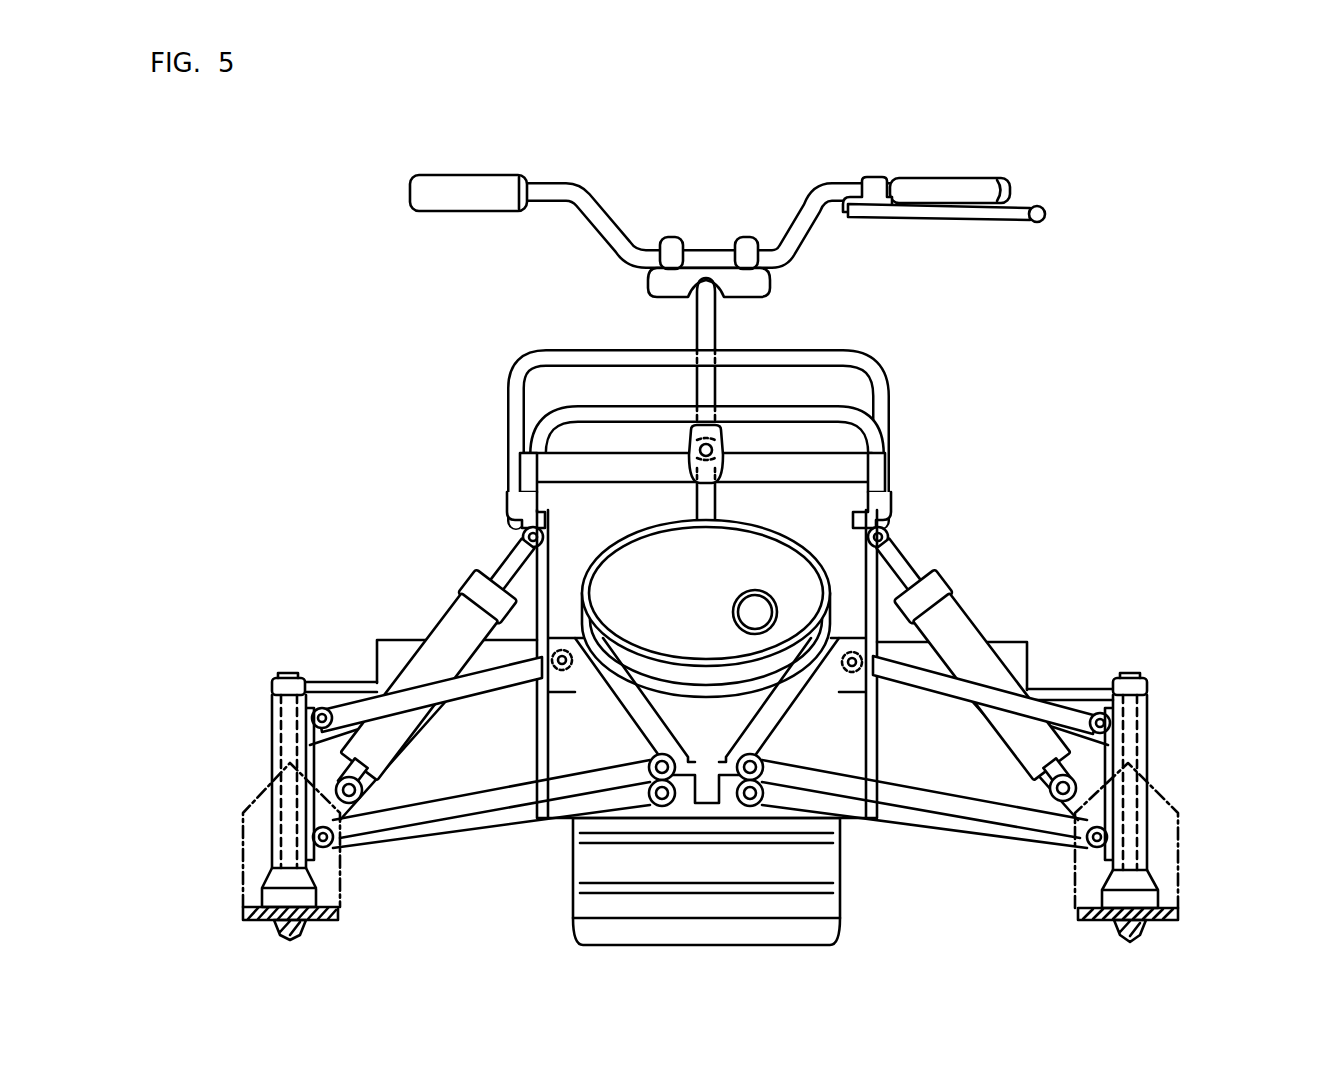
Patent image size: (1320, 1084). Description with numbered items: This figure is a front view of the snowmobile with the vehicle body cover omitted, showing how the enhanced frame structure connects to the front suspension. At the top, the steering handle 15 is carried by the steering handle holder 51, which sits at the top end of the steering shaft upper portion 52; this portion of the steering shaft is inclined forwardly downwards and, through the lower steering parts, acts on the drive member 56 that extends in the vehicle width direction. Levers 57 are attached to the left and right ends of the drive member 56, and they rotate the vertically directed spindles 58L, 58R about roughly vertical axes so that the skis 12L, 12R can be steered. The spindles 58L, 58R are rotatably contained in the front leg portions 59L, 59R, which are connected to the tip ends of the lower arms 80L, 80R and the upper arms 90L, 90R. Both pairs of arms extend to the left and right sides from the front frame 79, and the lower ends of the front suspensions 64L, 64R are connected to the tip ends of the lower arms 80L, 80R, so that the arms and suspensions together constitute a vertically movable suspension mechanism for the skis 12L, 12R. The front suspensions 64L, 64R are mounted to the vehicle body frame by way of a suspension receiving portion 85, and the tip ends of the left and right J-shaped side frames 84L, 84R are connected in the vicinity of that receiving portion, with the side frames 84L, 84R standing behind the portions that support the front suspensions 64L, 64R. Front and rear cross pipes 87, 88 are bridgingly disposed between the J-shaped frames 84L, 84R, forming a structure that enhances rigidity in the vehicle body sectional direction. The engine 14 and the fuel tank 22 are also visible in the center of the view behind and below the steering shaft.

The ski 12R is at (243, 916).
The ski 12L is at (1180, 916).
The engine 14 is at (830, 868).
The handlebar 15 is at (618, 218).
The fuel tank 22 is at (652, 580).
The steering handle holder 51 is at (665, 283).
The steering shaft upper portion 52 is at (705, 312).
The drive member 56 is at (335, 684).
The lever 57 is at (278, 683).
The spindle 58R is at (280, 748).
The spindle 58L is at (1140, 737).
The front leg portion 59R is at (268, 822).
The front leg portion 59L is at (1162, 812).
The front suspension 64R is at (465, 625).
The front suspension 64L is at (936, 618).
The front frame 79 is at (690, 718).
The lower arm 80R is at (435, 820).
The lower arm 80L is at (965, 810).
The side frame 84R is at (510, 472).
The side frame 84L is at (878, 470).
The suspension receiving portion 85 is at (878, 518).
The cross pipe 87 is at (797, 418).
The cross pipe 88 is at (535, 360).
The upper arm 90R is at (418, 700).
The upper arm 90L is at (968, 680).